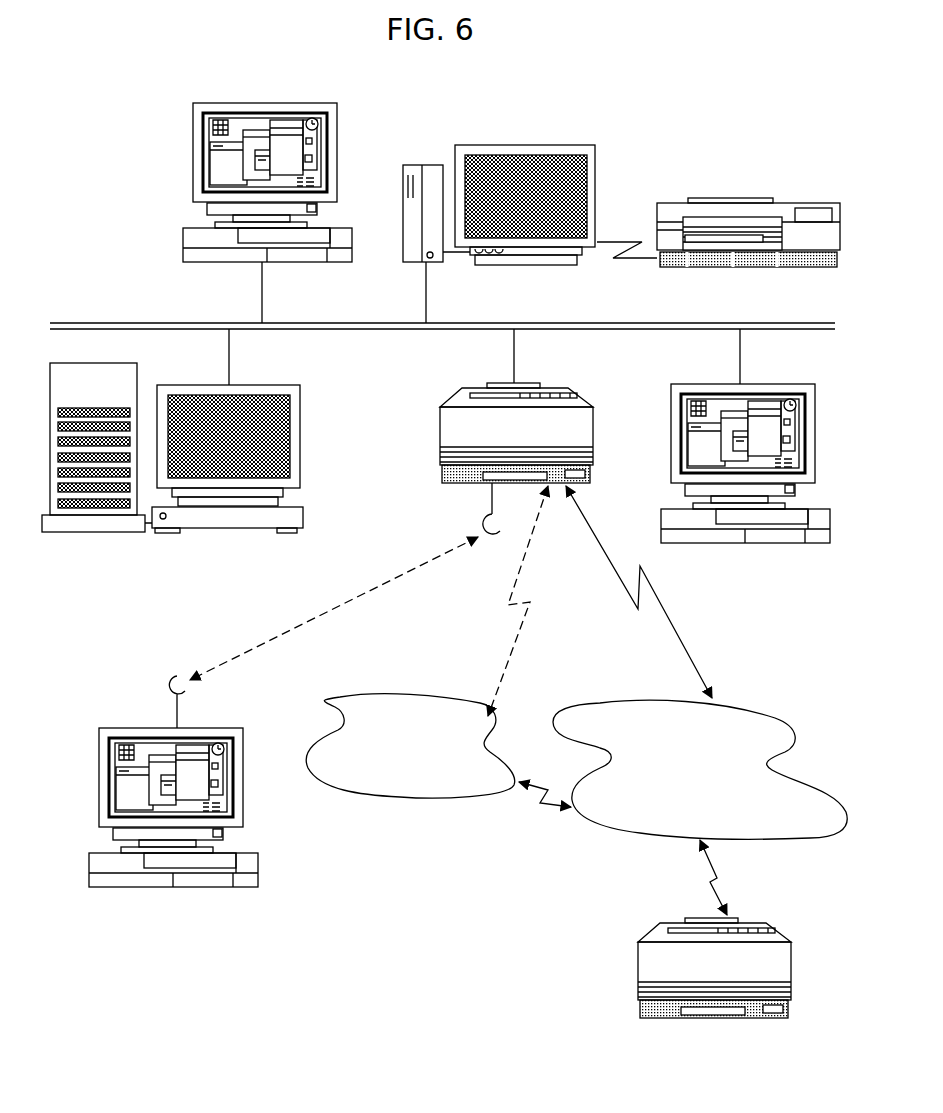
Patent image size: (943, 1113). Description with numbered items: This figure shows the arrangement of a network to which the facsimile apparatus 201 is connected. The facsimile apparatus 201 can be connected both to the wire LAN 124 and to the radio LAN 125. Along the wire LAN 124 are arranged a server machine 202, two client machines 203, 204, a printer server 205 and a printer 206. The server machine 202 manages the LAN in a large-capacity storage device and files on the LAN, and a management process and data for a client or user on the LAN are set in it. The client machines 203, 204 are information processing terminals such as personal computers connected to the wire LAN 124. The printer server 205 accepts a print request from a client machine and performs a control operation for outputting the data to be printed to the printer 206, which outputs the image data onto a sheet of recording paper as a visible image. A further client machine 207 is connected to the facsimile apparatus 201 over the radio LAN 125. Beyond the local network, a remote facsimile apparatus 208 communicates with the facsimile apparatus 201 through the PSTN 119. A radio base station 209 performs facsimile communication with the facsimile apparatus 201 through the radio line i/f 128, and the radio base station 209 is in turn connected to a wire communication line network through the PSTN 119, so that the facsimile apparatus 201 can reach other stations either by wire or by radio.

The PSTN 119 is at (684, 645).
The wire LAN 124 is at (765, 323).
The radio LAN 125 is at (375, 588).
The radio line i/f 128 is at (524, 623).
The facsimile apparatus 201 is at (440, 432).
The server machine 202 is at (152, 542).
The client machine 203 is at (265, 104).
The client machine 204 is at (733, 547).
The printer server 205 is at (495, 147).
The printer 206 is at (730, 203).
The client machine 207 is at (167, 887).
The facsimile apparatus 208 is at (716, 1024).
The radio base station 209 is at (410, 746).